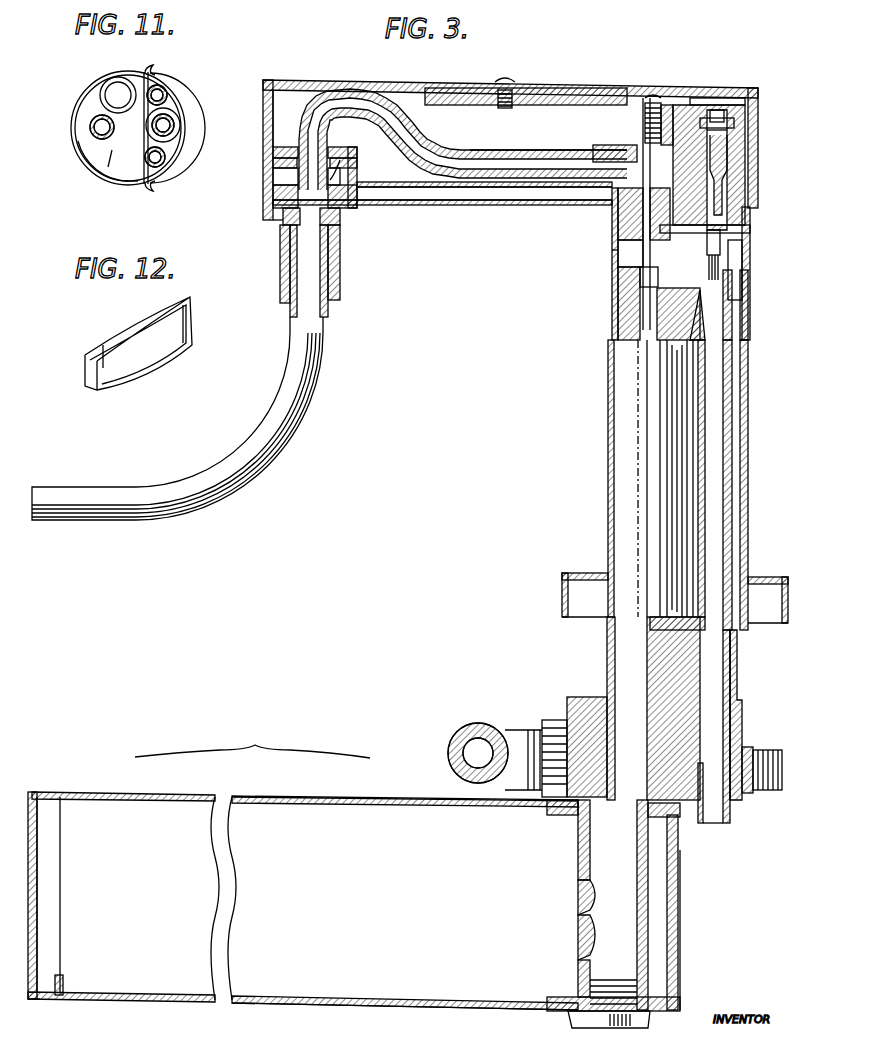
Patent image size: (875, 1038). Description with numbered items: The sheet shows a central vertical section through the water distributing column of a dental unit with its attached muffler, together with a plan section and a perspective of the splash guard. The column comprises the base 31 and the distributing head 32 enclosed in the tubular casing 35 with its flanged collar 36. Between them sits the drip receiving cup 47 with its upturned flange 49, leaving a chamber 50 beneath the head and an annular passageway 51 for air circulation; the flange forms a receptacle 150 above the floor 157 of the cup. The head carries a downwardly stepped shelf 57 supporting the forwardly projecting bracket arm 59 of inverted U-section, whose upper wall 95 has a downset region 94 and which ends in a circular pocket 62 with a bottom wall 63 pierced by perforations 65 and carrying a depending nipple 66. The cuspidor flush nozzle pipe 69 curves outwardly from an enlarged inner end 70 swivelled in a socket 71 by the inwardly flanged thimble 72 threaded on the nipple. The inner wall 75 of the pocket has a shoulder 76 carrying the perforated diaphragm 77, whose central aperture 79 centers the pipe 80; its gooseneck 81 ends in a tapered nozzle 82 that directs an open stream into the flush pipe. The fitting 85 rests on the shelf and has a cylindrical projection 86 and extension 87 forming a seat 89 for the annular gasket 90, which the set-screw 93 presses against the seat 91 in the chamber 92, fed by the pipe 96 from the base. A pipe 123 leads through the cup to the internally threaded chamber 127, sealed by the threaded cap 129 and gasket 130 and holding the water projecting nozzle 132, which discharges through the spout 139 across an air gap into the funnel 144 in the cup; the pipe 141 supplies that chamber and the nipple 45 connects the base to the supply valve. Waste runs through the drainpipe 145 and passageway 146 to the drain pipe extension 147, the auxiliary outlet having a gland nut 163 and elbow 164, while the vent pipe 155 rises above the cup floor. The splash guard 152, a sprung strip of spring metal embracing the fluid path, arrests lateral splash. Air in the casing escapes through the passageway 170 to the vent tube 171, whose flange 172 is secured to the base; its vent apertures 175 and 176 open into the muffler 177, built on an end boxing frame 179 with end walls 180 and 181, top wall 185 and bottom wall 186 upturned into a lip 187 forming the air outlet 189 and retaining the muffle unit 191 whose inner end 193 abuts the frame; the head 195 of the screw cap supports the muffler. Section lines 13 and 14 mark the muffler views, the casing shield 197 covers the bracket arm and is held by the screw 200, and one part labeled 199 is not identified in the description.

In FIG. 3, the section line 13— 13 is at (392, 771).
In FIG. 3, the section line 14— 14 is at (16, 905).
In FIG. 3, the base 31 is at (742, 717).
In FIG. 3, the distributing head 32 is at (735, 187).
In FIG. 3, the tubular casing 35 is at (607, 497).
In FIG. 3, the flanged collar 36 is at (562, 602).
In FIG. 3, the nipple 45 is at (768, 793).
In FIG. 11, the drip receiving cup 47 is at (90, 90).
In FIG. 3, the drip receiving cup 47 is at (732, 317).
In FIG. 11, the upturned flange 49 is at (82, 160).
In FIG. 3, the upturned flange 49 is at (630, 280).
In FIG. 3, the chamber 50 is at (742, 262).
In FIG. 3, the passageway 51 is at (617, 323).
In FIG. 3, the downwardly stepped shelf 57 is at (613, 210).
In FIG. 3, the bracket arm 59 is at (502, 183).
In FIG. 3, the circular pocket 62 is at (357, 210).
In FIG. 3, the bottom wall 63 is at (290, 203).
In FIG. 3, the perforations 65 is at (277, 221).
In FIG. 3, the depending nipple 66 is at (338, 255).
In FIG. 3, the cuspidor flush nozzle pipe 69 is at (277, 450).
In FIG. 3, the enlarged inner end 70 is at (287, 287).
In FIG. 3, the socket 71 is at (283, 258).
In FIG. 3, the inwardly flanged thimble 72 is at (340, 297).
In FIG. 3, the inner wall 75 is at (280, 183).
In FIG. 3, the shoulder 76 is at (273, 168).
In FIG. 3, the perforated diaphragm 77 is at (358, 163).
In FIG. 3, the central aperture 79 is at (273, 148).
In FIG. 3, the pipe 80 is at (530, 152).
In FIG. 3, the gooseneck 81 is at (365, 92).
In FIG. 3, the tapered nozzle 82 is at (323, 222).
In FIG. 3, the fitting 85 is at (605, 146).
In FIG. 3, the depending cylindrical projection 86 is at (614, 222).
In FIG. 3, the cylindrical depending extension 87 is at (618, 240).
In FIG. 3, the seat 89 is at (727, 208).
In FIG. 3, the annular gasket 90 is at (745, 228).
In FIG. 3, the seat 91 is at (612, 250).
In FIG. 3, the chamber 92 is at (623, 247).
In FIG. 3, the set-screw 93 is at (657, 97).
In FIG. 3, the downset region 94 is at (673, 112).
In FIG. 3, the upper wall 95 is at (572, 88).
In FIG. 11, the pipe 96 is at (89, 127).
In FIG. 3, the pipe 96 is at (660, 368).
In FIG. 11, the pipe 123 is at (165, 170).
In FIG. 3, the internally threaded chamber 127 is at (735, 133).
In FIG. 3, the threaded cap 129 is at (735, 98).
In FIG. 3, the gasket 130 is at (748, 110).
In FIG. 3, the water projecting nozzle 132 is at (735, 153).
In FIG. 3, the discharge spout 139 is at (727, 257).
In FIG. 11, the pipe 141 is at (162, 87).
In FIG. 3, the pipe 141 is at (695, 552).
In FIG. 11, the funnel 144 is at (178, 122).
In FIG. 3, the funnel 144 is at (722, 305).
In FIG. 11, the column drainpipe 145 is at (172, 133).
In FIG. 3, the column drainpipe 145 is at (733, 488).
In FIG. 3, the passageway 146 is at (715, 692).
In FIG. 3, the drain pipe extension 147 is at (712, 825).
In FIG. 11, the receptacle 150 is at (130, 187).
In FIG. 3, the receptacle 150 is at (633, 283).
In FIG. 11, the splash guard 152 is at (177, 107).
In FIG. 12, the splash guard 152 is at (160, 365).
In FIG. 11, the vent pipe 155 is at (110, 76).
In FIG. 3, the vent pipe 155 is at (650, 435).
In FIG. 11, the floor 157 is at (108, 167).
In FIG. 3, the gland nut 163 is at (542, 720).
In FIG. 3, the elbow 164 is at (483, 717).
In FIG. 3, the passageway 170 is at (623, 662).
In FIG. 3, the air outlet vent tube 171 is at (650, 860).
In FIG. 3, the flange 172 is at (573, 803).
In FIG. 3, the vent aperture 175 is at (587, 905).
In FIG. 3, the vent aperture 176 is at (587, 953).
In FIG. 3, the muffler 177 is at (303, 866).
In FIG. 3, the end boxing frame 179 is at (670, 953).
In FIG. 3, the end wall 180 is at (670, 988).
In FIG. 3, the end wall 181 is at (32, 800).
In FIG. 3, the top wall 185 is at (275, 797).
In FIG. 3, the bottom wall 186 is at (328, 1007).
In FIG. 3, the lip 187 is at (63, 980).
In FIG. 3, the air outlet 189 is at (43, 995).
In FIG. 3, the noise absorbing muffle unit 191 is at (281, 908).
In FIG. 3, the inner end 193 is at (597, 1005).
In FIG. 3, the head 195 is at (647, 1022).
In FIG. 3, the casing shield 197 is at (312, 80).
In FIG. 3, the rod 199 is at (260, 90).
In FIG. 3, the screw 200 is at (505, 82).